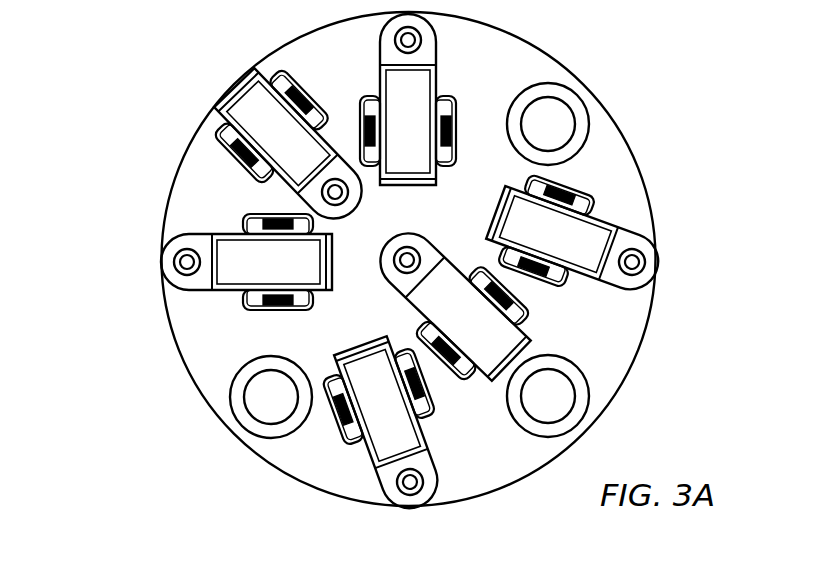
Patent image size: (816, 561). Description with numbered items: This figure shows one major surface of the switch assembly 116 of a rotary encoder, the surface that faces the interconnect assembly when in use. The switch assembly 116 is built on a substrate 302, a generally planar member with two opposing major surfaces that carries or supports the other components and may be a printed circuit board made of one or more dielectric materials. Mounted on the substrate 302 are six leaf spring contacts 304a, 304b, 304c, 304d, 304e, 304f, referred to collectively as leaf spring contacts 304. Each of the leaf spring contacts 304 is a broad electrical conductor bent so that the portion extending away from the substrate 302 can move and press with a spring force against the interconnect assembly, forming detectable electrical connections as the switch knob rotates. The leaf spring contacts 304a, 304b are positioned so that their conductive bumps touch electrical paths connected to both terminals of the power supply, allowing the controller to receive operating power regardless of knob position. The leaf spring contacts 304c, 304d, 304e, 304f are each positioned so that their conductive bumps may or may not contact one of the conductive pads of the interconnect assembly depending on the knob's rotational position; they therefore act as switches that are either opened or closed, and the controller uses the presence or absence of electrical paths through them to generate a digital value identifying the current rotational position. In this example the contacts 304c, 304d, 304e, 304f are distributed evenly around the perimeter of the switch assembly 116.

The switch assembly 116 is at (128, 84).
The substrate 302 is at (612, 329).
The leaf spring contacts 304 is at (665, 257).
The leaf spring contact 304a is at (246, 135).
The leaf spring contact 304b is at (434, 322).
The leaf spring contact 304c is at (387, 142).
The leaf spring contact 304d is at (290, 276).
The leaf spring contact 304e is at (358, 412).
The leaf spring contact 304f is at (571, 243).